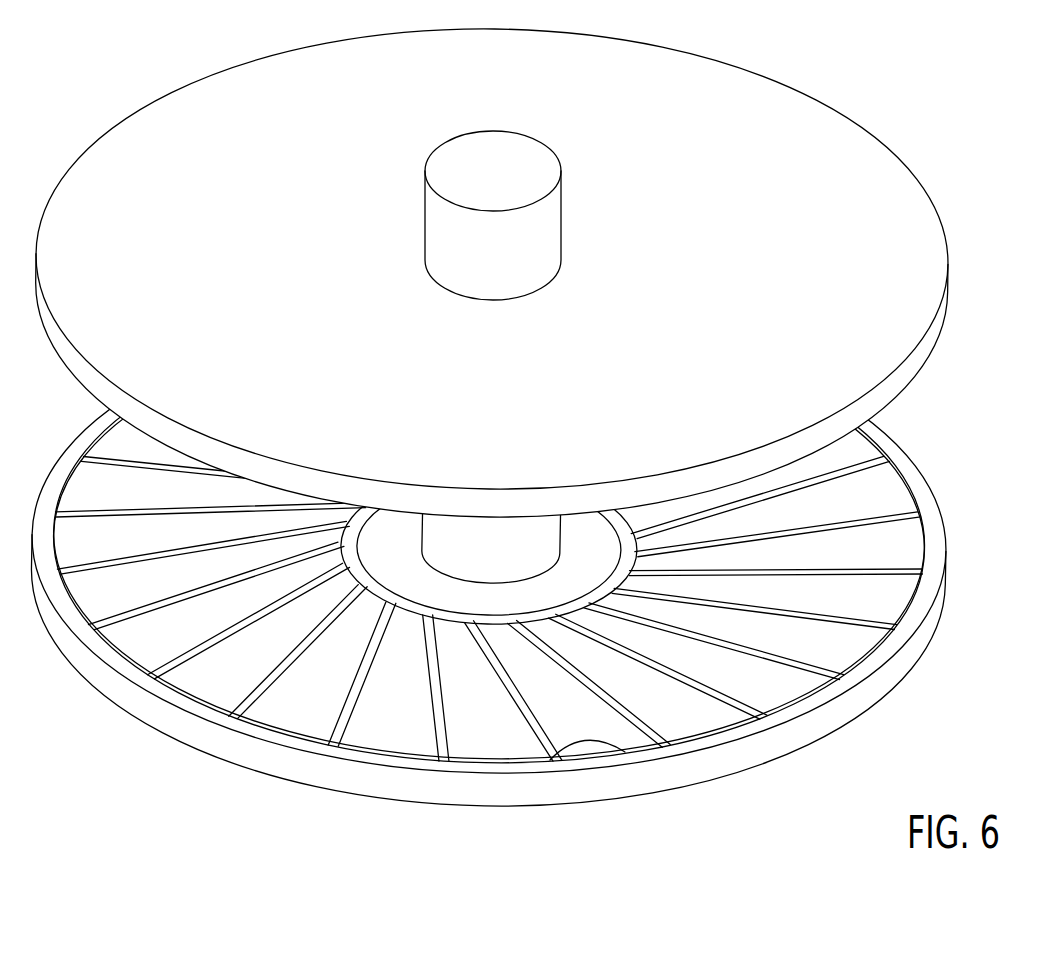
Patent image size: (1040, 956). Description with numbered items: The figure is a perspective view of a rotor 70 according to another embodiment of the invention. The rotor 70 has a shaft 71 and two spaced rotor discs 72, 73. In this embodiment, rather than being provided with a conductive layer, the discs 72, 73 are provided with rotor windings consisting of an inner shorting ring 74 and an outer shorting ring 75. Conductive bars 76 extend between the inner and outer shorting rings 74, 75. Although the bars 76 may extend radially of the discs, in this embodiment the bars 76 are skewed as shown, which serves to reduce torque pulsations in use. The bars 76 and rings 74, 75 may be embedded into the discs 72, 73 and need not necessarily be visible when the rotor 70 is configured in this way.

The rotor 70 is at (892, 120).
The shaft 71 is at (518, 150).
The rotor disc 72 is at (922, 357).
The rotor disc 73 is at (506, 571).
The inner shorting ring 74 is at (738, 735).
The outer shorting ring 75 is at (832, 697).
The conductive bar 76 is at (630, 755).